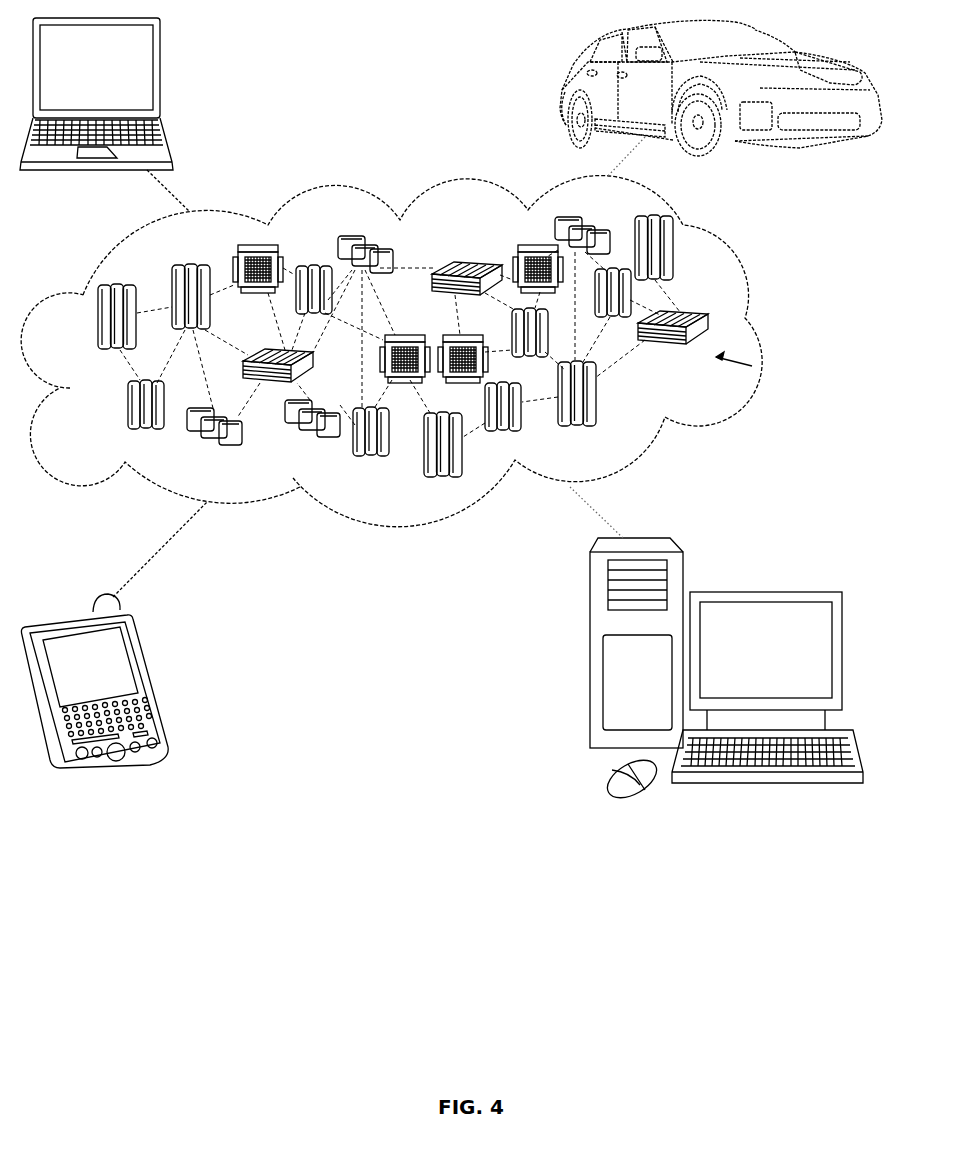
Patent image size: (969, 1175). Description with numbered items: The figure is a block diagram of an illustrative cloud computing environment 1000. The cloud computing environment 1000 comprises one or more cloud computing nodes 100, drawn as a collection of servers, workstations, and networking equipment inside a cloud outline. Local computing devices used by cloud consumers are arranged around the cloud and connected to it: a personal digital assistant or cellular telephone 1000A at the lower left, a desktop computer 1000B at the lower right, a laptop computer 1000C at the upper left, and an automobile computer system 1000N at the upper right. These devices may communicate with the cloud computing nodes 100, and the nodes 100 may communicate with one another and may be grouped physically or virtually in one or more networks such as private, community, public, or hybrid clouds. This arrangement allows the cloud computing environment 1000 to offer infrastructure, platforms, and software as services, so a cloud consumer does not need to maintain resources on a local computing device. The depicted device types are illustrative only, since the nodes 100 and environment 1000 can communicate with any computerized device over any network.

The cloud computing environment 1000 is at (763, 326).
The cloud computing nodes 100 is at (752, 366).
The personal digital assistant (PDA) or cellular telephone 1000A is at (152, 680).
The desktop computer 1000B is at (775, 568).
The laptop computer 1000C is at (160, 77).
The automobile computer system 1000N is at (560, 91).